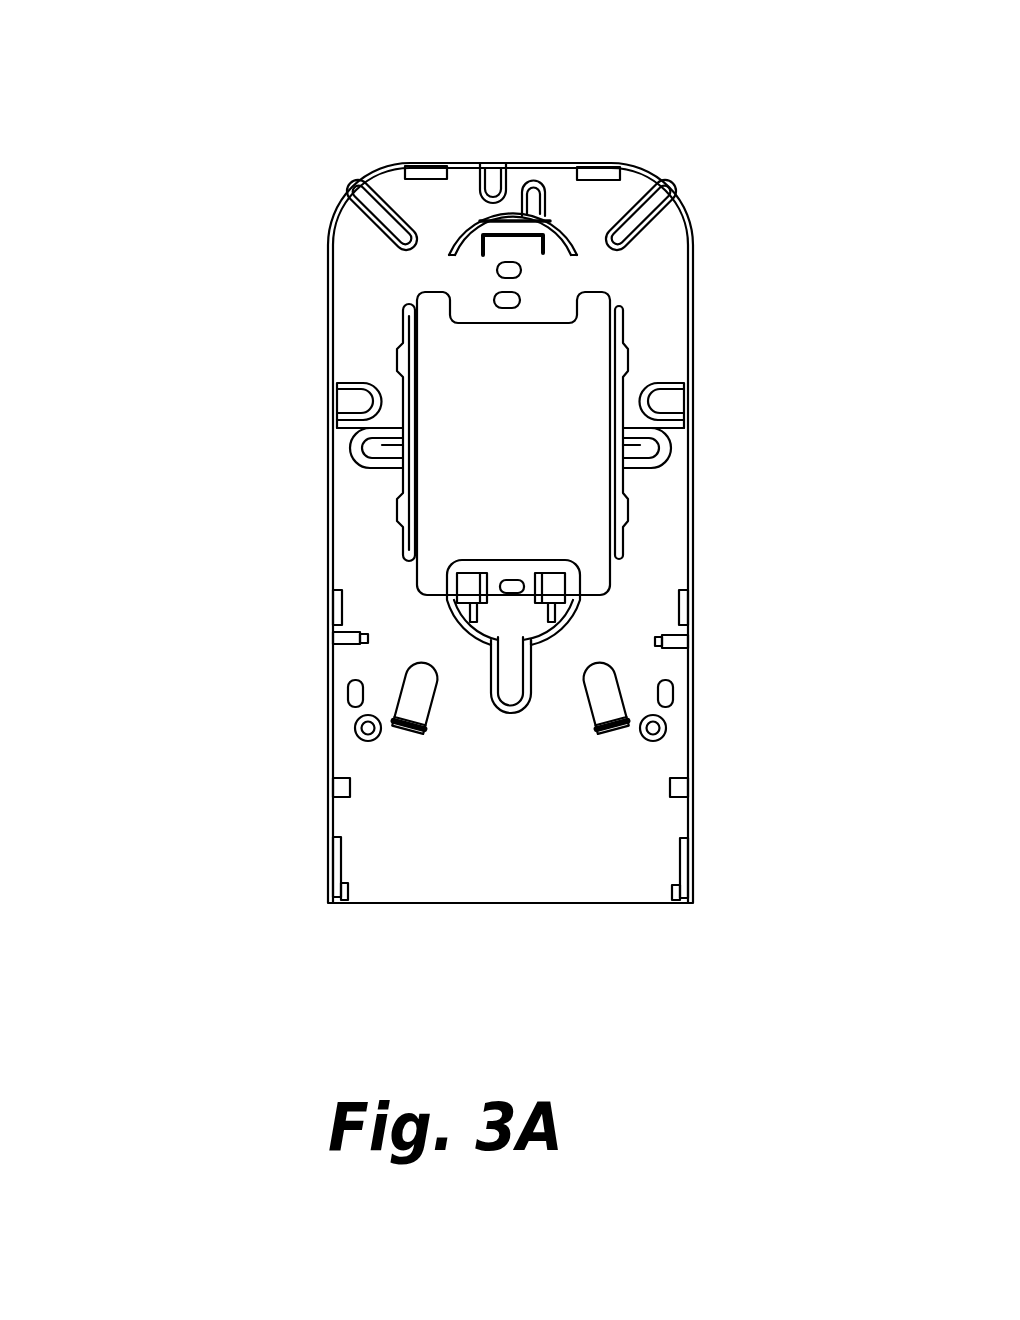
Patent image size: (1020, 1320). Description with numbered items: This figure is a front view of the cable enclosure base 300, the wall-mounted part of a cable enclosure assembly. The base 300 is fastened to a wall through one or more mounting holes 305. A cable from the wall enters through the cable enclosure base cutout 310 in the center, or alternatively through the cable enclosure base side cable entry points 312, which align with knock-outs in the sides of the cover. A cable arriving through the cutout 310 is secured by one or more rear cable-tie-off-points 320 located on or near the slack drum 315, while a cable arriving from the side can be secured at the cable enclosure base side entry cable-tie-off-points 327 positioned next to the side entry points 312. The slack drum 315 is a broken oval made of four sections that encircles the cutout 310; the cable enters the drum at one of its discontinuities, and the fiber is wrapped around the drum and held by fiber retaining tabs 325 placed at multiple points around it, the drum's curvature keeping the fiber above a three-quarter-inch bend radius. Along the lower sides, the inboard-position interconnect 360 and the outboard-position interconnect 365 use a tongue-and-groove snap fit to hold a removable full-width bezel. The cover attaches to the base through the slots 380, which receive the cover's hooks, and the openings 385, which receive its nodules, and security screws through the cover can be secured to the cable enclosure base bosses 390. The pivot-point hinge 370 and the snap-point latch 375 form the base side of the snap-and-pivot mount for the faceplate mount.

The cable enclosure base 300 is at (258, 506).
The mounting holes 305 is at (512, 268).
The cable enclosure base cutout 310 is at (460, 398).
The cable enclosure base side cable entry points 312 is at (686, 622).
The slack drum 315 is at (455, 235).
The rear cable-tie-off-points 320 is at (400, 507).
The fiber retaining tabs 325 is at (493, 176).
The cable enclosure base side entry cable-tie-off-points 327 is at (677, 640).
The inboard-position interconnect 360 is at (682, 787).
The outboard-position interconnect 365 is at (678, 895).
The pivot-point hinge 370 is at (467, 597).
The snap-point latch 375 is at (498, 217).
The slots 380 is at (430, 170).
The openings 385 is at (684, 845).
The cable enclosure base bosses 390 is at (355, 733).